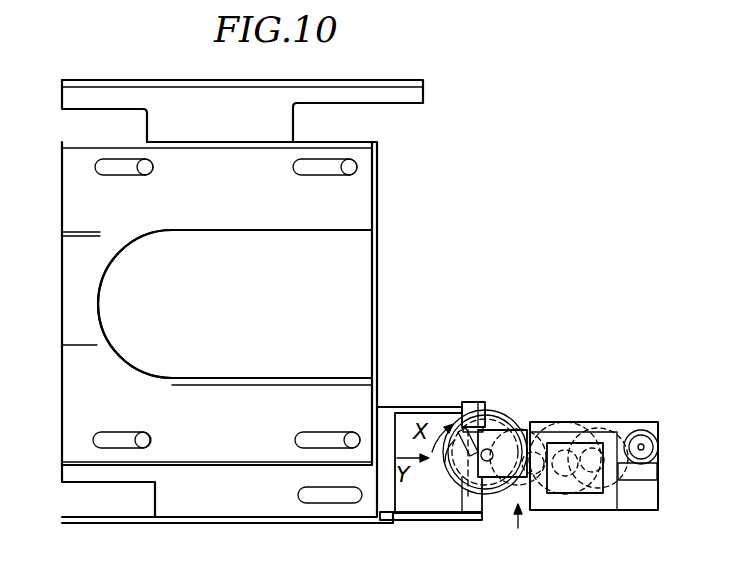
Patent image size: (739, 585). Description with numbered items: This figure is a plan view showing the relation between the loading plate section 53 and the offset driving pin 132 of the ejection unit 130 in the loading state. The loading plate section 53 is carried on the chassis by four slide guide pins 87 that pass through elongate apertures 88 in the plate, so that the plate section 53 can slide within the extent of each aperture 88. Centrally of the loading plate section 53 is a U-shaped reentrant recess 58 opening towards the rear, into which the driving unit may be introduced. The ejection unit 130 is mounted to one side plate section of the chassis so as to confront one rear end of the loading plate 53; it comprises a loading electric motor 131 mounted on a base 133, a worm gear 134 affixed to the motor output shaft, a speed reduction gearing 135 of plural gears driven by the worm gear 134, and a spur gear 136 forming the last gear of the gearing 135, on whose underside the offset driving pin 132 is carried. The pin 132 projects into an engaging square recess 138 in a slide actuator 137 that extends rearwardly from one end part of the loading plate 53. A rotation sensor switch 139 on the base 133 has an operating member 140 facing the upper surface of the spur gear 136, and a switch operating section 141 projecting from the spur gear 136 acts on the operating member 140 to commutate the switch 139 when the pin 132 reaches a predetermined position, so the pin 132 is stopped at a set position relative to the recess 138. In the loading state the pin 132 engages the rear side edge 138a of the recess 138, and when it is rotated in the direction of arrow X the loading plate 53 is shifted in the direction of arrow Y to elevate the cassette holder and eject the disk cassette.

The loading plate section 53 is at (62, 320).
The U-shaped reentrant recess 58 is at (107, 275).
The slide guide pin 87 is at (352, 164).
The elongate aperture 88 is at (120, 172).
The ejection unit 130 is at (563, 410).
The loading electric motor 131 is at (592, 490).
The offset driving pin 132 is at (466, 499).
The base 133 is at (623, 423).
The worm gear 134 is at (657, 473).
The speed reduction gearing 135 is at (524, 529).
The spur gear 136 is at (492, 423).
The slide actuator 137 is at (412, 520).
The engaging square recess 138 is at (410, 415).
The rear side edge 138a is at (466, 506).
The rotation sensor switch 139 is at (470, 401).
The operating member 140 is at (449, 419).
The switch operating section 141 is at (452, 449).